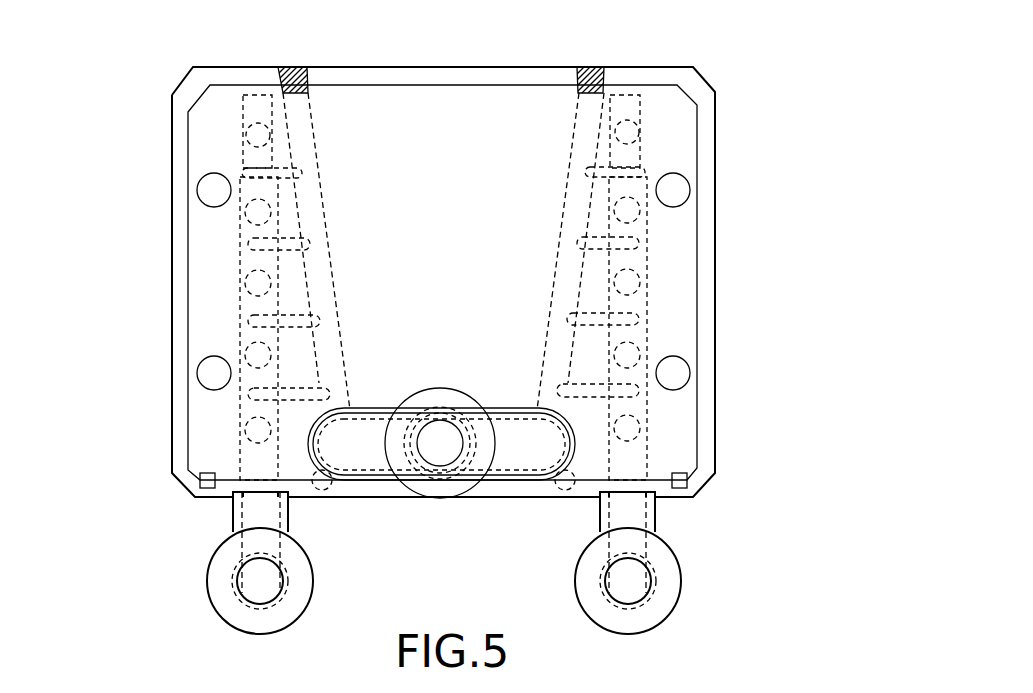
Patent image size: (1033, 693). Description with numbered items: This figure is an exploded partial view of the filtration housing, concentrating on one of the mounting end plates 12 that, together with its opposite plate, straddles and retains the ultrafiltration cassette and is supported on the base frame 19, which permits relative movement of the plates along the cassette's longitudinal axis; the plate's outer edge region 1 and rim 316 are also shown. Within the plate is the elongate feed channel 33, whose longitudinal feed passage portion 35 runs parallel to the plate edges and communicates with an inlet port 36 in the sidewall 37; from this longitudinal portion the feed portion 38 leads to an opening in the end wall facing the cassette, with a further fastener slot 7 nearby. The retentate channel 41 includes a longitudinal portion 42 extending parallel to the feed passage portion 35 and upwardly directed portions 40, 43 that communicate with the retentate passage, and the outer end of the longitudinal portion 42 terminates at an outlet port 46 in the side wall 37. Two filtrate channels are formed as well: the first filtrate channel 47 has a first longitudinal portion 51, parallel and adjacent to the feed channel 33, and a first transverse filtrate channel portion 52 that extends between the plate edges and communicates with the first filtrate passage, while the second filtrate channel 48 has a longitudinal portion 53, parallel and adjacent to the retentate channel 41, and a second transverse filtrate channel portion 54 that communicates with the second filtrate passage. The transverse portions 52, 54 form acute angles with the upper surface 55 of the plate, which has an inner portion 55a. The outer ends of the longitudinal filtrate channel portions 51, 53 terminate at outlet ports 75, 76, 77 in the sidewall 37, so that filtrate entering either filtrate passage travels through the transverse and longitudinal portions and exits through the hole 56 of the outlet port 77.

The base plate 1 is at (652, 67).
The first mounting end plate 12 is at (446, 45).
The plate rim 316 is at (718, 105).
The base frame 19 is at (446, 177).
The second filtrate channel 48 is at (313, 118).
The first filtrate channel 47 is at (575, 116).
The upwardly directed portion of retentate channel 43 is at (247, 136).
The retentate channel 41 is at (240, 298).
The upwardly directed portion of retentate channel 40 is at (247, 272).
The longitudinal portion of second filtrate channel 53 is at (287, 198).
The second transverse filtrate channel portion 54 is at (288, 383).
The longitudinal portion of retentate channel 42 is at (242, 403).
The first longitudinal portion of first filtrate channel 51 is at (562, 190).
The first transverse filtrate channel portion 52 is at (593, 385).
The longitudinal feed passage portion 35 is at (647, 412).
The feed portion 38 is at (643, 282).
The fastener slot 7 is at (630, 318).
The feed channel 33 is at (643, 333).
The upper surface of end plate 55 is at (353, 448).
The inner portion of upper surface 55a is at (508, 466).
The outlet port 77 is at (473, 480).
The hole of outlet port 56 is at (438, 442).
The sidewall 37 is at (667, 499).
The outlet port 46 is at (258, 496).
The inlet port 36 is at (630, 493).
The outlet port 76 is at (313, 584).
The outlet port 75 is at (682, 578).